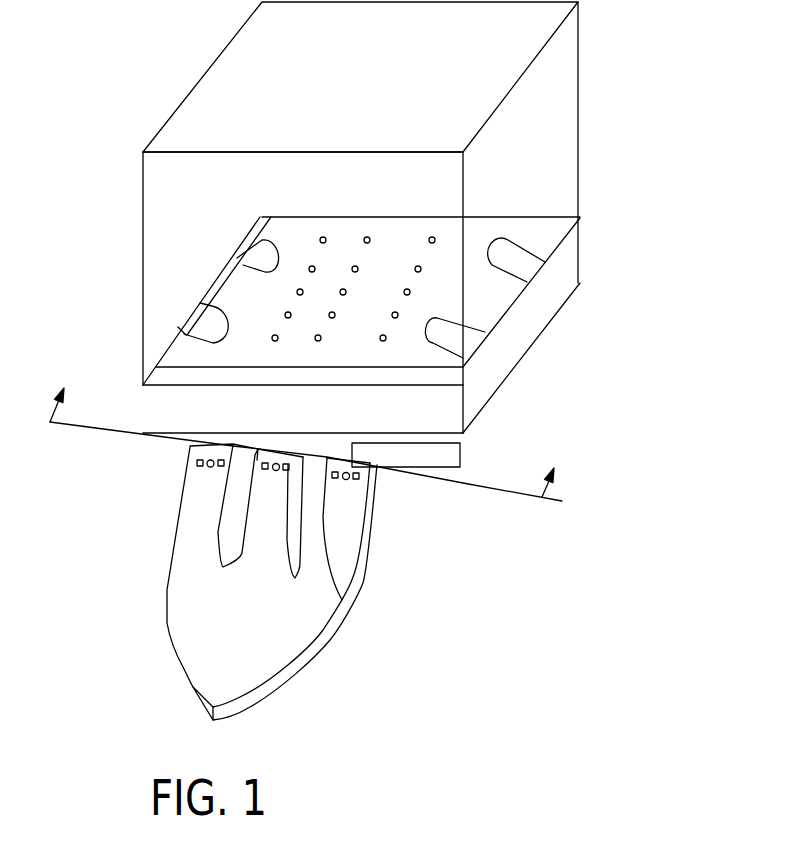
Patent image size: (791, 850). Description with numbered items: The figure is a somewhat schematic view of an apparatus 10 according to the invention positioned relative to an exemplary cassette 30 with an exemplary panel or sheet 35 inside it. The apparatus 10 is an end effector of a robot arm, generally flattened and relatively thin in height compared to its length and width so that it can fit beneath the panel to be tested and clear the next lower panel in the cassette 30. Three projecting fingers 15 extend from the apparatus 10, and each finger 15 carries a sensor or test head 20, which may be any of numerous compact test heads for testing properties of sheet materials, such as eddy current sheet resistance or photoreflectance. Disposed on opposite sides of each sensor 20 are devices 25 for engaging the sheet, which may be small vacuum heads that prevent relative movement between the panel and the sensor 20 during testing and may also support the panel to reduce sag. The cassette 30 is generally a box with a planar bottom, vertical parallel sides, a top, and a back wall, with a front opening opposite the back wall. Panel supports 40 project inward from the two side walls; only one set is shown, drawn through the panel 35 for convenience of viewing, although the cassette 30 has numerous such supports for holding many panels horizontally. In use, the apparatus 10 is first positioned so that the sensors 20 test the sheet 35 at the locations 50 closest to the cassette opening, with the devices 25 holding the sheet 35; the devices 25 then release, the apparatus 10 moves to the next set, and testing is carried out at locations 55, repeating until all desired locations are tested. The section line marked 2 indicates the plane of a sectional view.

The section line 2- 2 is at (310, 427).
The apparatus 10 is at (168, 577).
The projecting fingers 15 is at (197, 522).
The sensor 20 is at (208, 465).
The devices for engaging a sheet of material 25 is at (188, 443).
The cassette 30 is at (143, 205).
The panel or sheet 35 is at (430, 385).
The panel supports 40 is at (237, 258).
The locations 50 is at (272, 340).
The locations 55 is at (432, 240).